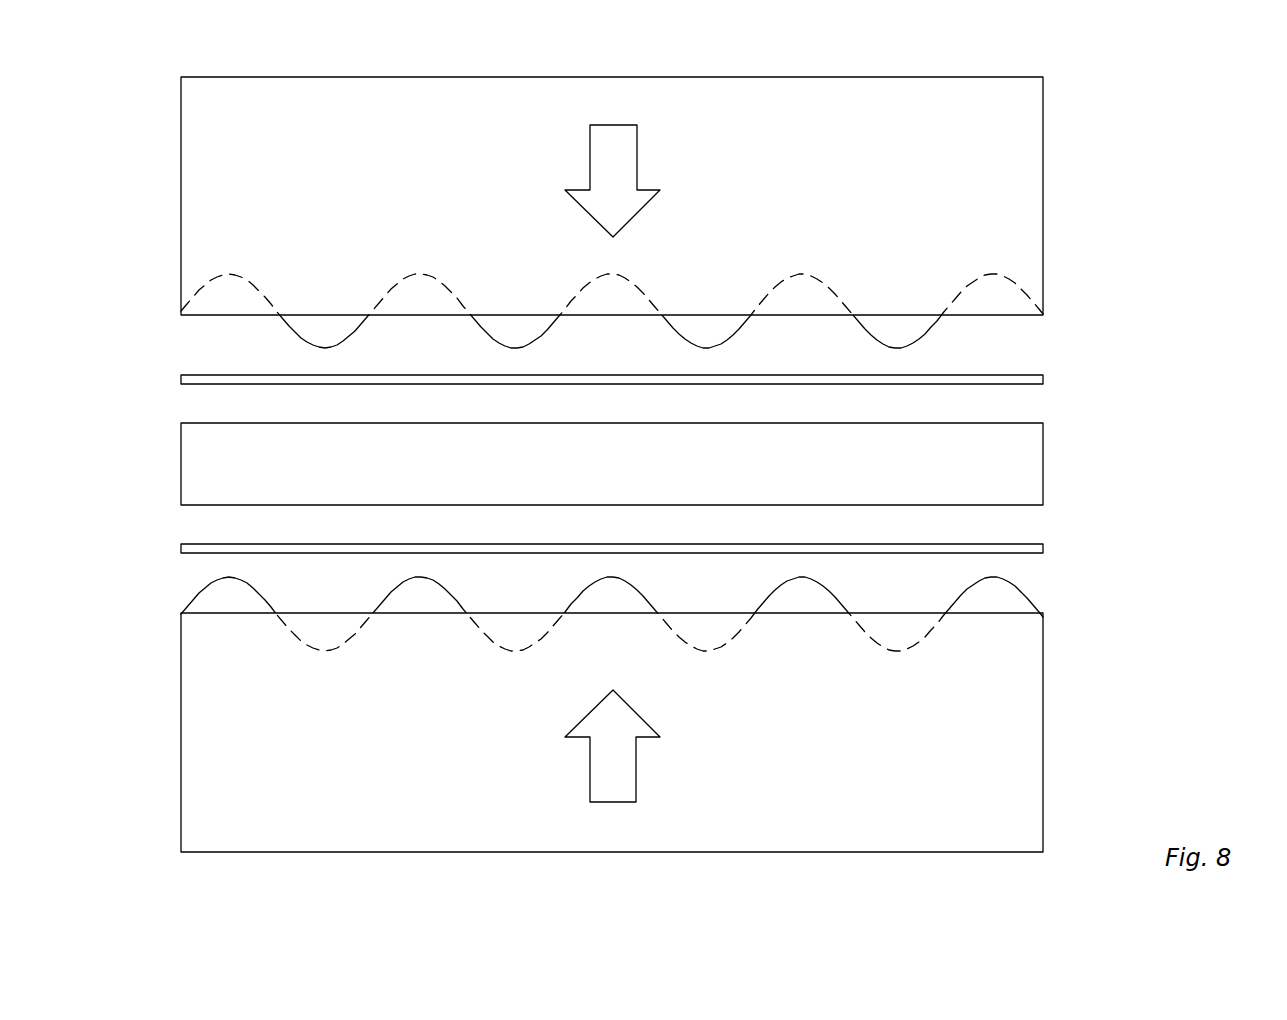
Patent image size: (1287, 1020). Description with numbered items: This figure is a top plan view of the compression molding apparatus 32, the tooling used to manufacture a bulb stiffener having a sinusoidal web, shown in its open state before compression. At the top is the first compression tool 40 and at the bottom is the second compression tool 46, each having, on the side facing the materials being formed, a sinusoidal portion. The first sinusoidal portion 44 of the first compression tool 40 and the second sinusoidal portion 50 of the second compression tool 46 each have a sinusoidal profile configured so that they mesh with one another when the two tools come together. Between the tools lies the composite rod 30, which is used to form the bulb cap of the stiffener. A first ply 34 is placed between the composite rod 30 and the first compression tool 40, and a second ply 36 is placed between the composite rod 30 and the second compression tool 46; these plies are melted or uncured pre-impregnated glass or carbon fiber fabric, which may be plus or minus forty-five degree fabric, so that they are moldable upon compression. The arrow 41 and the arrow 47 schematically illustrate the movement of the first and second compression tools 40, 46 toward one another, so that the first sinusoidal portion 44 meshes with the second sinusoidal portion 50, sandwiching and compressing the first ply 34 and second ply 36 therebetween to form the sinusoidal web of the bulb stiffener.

The compression molding apparatus 32 is at (145, 88).
The first compression tool 40 is at (205, 185).
The arrow 41 is at (618, 158).
The first sinusoidal portion 44 is at (333, 332).
The first ply 34 is at (203, 378).
The composite rod 30 is at (198, 470).
The second ply 36 is at (203, 548).
The second compression tool 46 is at (215, 754).
The second sinusoidal portion 50 is at (430, 593).
The arrow 47 is at (617, 775).